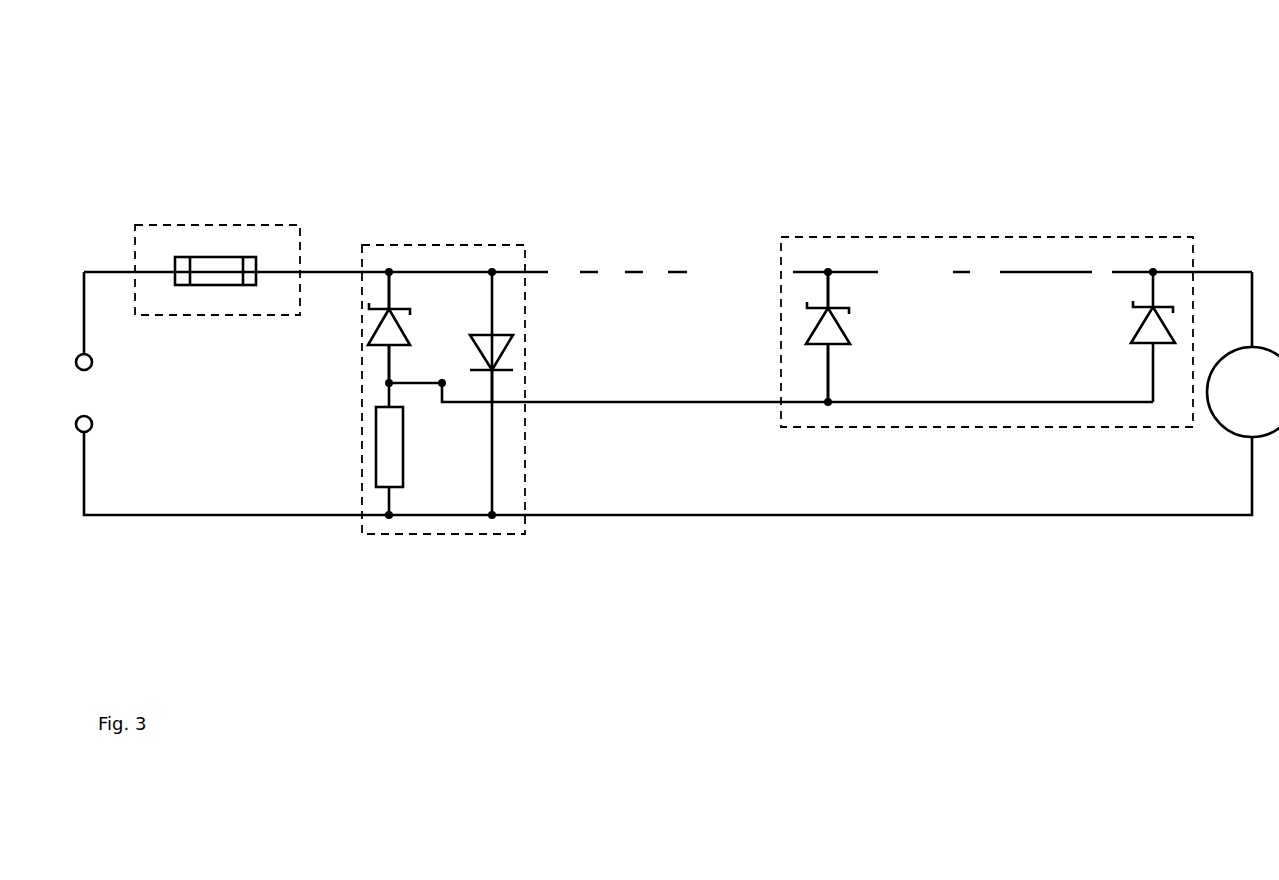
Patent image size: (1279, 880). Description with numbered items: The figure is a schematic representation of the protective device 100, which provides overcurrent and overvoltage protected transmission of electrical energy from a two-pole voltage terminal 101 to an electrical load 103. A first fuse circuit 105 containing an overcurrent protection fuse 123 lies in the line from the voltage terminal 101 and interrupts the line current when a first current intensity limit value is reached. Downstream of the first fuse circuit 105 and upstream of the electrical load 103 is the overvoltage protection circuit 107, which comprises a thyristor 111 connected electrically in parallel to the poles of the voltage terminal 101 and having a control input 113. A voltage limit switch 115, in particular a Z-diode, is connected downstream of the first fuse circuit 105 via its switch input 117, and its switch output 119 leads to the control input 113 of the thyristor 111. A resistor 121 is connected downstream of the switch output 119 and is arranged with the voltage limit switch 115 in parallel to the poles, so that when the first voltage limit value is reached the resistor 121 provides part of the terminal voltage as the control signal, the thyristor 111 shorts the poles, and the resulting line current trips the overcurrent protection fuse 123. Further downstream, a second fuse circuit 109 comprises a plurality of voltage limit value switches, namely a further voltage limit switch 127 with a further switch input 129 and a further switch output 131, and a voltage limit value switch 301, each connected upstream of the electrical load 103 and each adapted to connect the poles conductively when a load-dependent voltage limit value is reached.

The protective device 100 is at (257, 108).
The voltage terminal 101 is at (87, 402).
The electrical load 103 is at (1243, 392).
The first fuse circuit 105 is at (227, 225).
The overvoltage protection circuit 107 is at (483, 245).
The second fuse circuit 109 is at (973, 237).
The thyristor 111 is at (492, 367).
The control input 113 is at (492, 370).
The voltage limit switch 115 is at (385, 317).
The switch input 117 is at (389, 288).
The switch output 119 is at (389, 357).
The resistor 121 is at (393, 473).
The overcurrent protection fuse 123 is at (198, 264).
The further voltage limit switch 127 is at (823, 330).
The further switch input 129 is at (827, 292).
The further switch output 131 is at (828, 387).
The voltage limit value switch 301 is at (1148, 332).